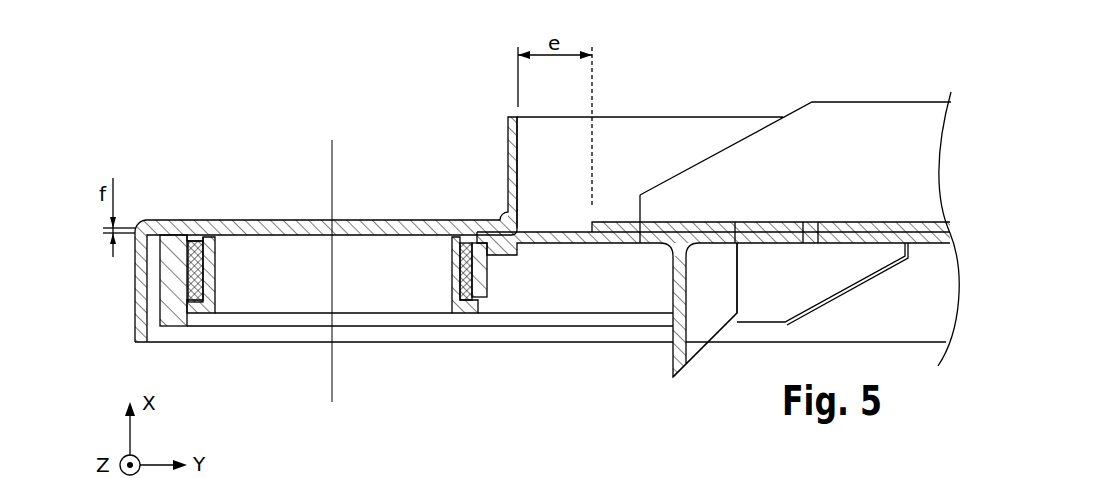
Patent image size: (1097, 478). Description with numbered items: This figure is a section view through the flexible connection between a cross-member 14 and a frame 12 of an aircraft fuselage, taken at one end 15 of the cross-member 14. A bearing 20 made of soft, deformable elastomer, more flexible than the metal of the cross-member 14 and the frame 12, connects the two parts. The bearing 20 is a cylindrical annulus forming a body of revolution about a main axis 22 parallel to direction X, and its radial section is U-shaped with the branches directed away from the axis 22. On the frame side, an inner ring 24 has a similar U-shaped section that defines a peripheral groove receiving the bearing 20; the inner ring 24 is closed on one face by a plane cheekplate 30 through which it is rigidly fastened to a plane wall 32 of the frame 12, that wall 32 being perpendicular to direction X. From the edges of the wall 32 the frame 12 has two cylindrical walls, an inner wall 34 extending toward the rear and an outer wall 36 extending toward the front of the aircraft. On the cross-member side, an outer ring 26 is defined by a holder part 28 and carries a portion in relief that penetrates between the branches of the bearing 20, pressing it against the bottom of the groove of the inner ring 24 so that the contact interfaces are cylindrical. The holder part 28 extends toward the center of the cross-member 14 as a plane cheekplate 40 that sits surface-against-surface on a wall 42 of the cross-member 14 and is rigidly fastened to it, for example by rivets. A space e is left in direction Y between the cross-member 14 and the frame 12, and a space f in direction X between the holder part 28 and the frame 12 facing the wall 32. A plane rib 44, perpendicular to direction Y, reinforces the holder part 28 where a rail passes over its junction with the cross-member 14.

The frame 12 is at (498, 140).
The cross-member 14 is at (836, 93).
The end of the cross-member 15 is at (610, 222).
The bearing 20 is at (208, 258).
The main axis 22 is at (332, 373).
The inner ring 24 is at (210, 287).
The outer ring 26 is at (480, 278).
The holder part 28 is at (664, 361).
The cheekplate 30 is at (375, 232).
The wall of the frame 32 is at (187, 222).
The inner wall 34 is at (515, 168).
The outer wall 36 is at (137, 277).
The cheekplate 40 is at (777, 245).
The wall of the cross-member 42 is at (840, 221).
The plane rib 44 is at (712, 298).